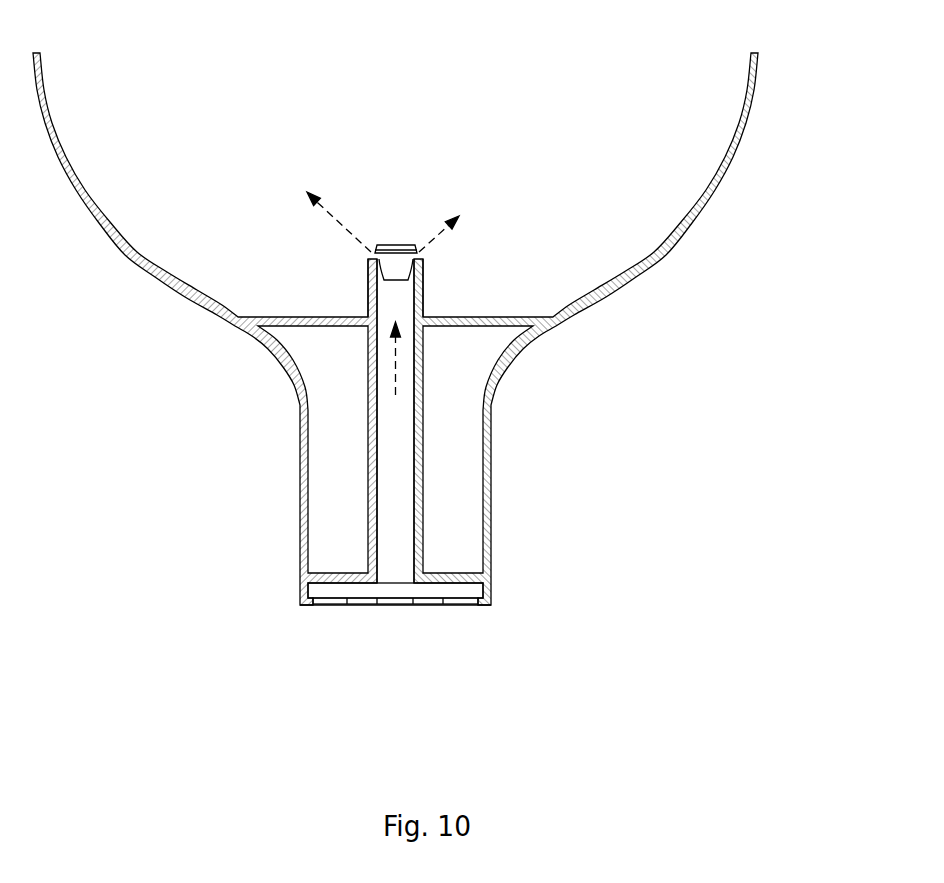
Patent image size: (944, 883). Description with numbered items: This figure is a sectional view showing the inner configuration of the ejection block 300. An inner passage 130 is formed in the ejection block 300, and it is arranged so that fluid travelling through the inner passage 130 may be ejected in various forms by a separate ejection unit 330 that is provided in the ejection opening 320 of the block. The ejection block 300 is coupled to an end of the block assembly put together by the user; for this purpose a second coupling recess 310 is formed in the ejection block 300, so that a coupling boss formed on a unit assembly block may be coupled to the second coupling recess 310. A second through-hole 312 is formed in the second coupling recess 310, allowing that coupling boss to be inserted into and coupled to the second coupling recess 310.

The ejection block 300 is at (741, 140).
The ejection opening 320 is at (423, 288).
The ejection unit 330 is at (397, 245).
The inner passage 130 is at (397, 448).
The second coupling recess 310 is at (320, 600).
The second through-hole 312 is at (460, 601).